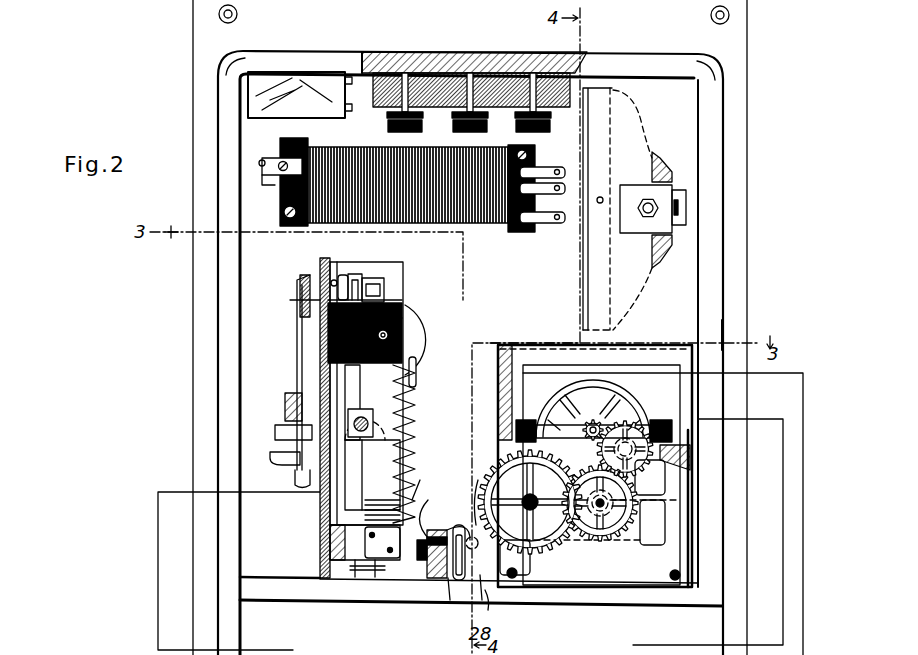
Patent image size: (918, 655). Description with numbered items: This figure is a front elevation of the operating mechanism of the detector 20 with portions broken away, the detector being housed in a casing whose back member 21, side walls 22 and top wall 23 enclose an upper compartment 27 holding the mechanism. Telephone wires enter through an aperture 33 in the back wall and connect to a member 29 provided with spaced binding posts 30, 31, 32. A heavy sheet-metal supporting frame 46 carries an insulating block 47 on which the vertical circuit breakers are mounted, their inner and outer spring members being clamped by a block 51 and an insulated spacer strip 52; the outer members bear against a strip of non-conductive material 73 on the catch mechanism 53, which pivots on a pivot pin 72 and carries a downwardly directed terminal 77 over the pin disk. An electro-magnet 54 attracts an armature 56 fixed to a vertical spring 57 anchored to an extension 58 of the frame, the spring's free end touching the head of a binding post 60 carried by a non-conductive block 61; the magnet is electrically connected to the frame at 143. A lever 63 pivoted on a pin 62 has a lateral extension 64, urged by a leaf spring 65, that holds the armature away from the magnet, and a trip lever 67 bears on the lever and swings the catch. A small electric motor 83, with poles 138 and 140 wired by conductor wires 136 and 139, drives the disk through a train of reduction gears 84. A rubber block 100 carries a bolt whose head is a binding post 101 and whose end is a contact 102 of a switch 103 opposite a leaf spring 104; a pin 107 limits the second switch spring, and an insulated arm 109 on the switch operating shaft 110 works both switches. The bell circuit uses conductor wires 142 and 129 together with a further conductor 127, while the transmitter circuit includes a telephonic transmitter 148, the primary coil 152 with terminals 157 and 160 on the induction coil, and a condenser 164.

The detector 20 is at (216, 318).
The back member 21 is at (748, 213).
The side walls 22 is at (230, 373).
The top wall 23 is at (636, 63).
The upper compartment 27 is at (684, 330).
The terminal block 29 is at (574, 80).
The binding post 30 is at (536, 138).
The binding post 31 is at (470, 126).
The binding post 32 is at (452, 128).
The aperture 33 is at (424, 118).
The supporting frame 46 is at (312, 353).
The block 47 is at (320, 396).
The block 51 is at (292, 403).
The insulated spacer strip 52 is at (290, 440).
The catch mechanism 53 is at (320, 264).
The electro-magnet 54 is at (413, 327).
The armature 56 is at (404, 305).
The spring 57 is at (382, 497).
The extension 58 is at (365, 551).
The binding post 60 is at (416, 345).
The block 61 is at (400, 318).
The pin 62 is at (372, 475).
The lever 63 is at (335, 382).
The lateral extension 64 is at (417, 386).
The leaf spring 65 is at (374, 424).
The trip lever 67 is at (386, 294).
The pivot pin 72 is at (339, 276).
The strip of non-conductive material 73 is at (300, 288).
The terminal 77 is at (360, 276).
The electric motor 83 is at (626, 390).
The train of reduction gears 84 is at (504, 460).
The block 100 is at (447, 535).
The binding post 101 is at (421, 556).
The contact 102 is at (466, 538).
The switch 103 is at (485, 592).
The leaf spring 104 is at (468, 560).
The pin 107 is at (448, 582).
The insulated arm 109 is at (478, 488).
The switch operating shaft 110 is at (480, 576).
The link 127 is at (420, 470).
The conductor wire 129 is at (158, 540).
The conductor wire 136 is at (805, 405).
The pole 138 is at (512, 425).
The conductor wire 139 is at (785, 566).
The pole 140 is at (673, 424).
The conductor wire 142 is at (430, 540).
The electrical connection 143 is at (418, 372).
The telephonic transmitter 148 is at (480, 245).
The primary coil 152 is at (334, 149).
The terminal 157 is at (258, 162).
The terminal 160 is at (527, 243).
The condenser 164 is at (353, 100).